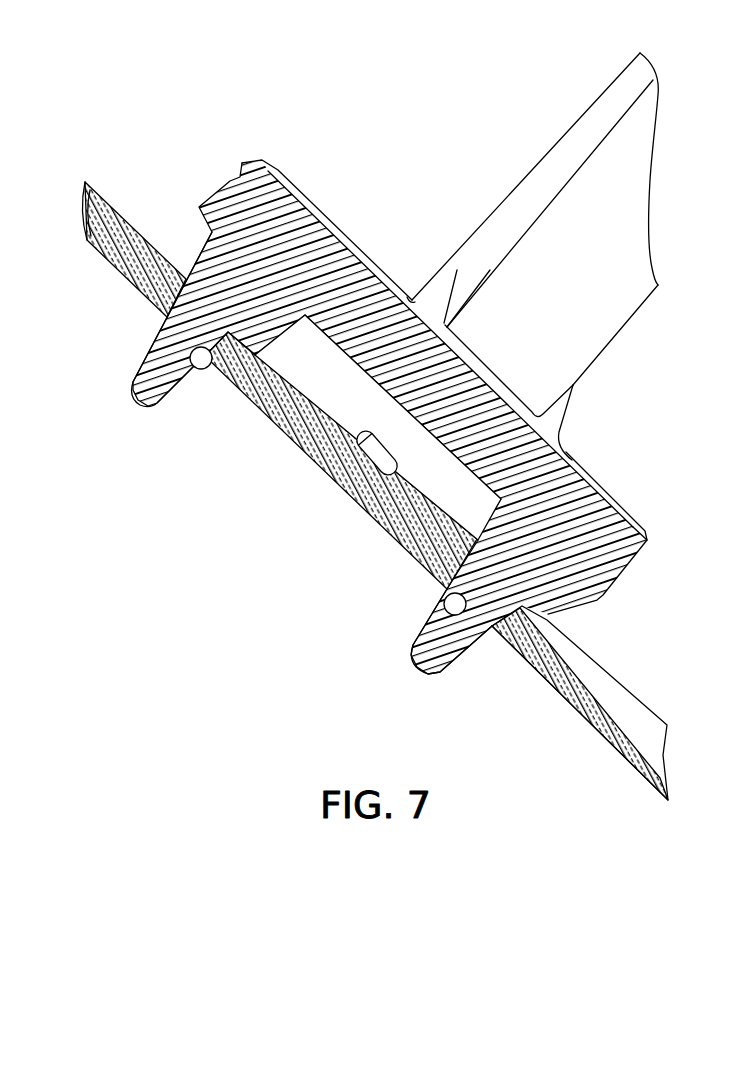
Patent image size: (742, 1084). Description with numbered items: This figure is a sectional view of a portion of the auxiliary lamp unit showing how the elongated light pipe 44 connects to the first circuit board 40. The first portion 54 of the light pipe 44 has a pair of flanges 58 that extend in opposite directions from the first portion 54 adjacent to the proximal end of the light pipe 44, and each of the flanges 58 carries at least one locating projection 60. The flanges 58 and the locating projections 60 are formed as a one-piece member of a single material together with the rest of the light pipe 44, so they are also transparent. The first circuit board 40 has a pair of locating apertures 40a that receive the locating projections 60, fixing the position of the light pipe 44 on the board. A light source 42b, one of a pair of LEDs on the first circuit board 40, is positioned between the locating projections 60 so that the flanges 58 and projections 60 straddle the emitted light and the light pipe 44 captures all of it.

The first circuit board 40 is at (133, 285).
The locating apertures 40a is at (197, 368).
The light source 42b is at (386, 444).
The elongated light pipe 44 is at (576, 112).
The first portion 54 is at (534, 166).
The flanges 58 is at (318, 211).
The locating projection 60 is at (176, 398).